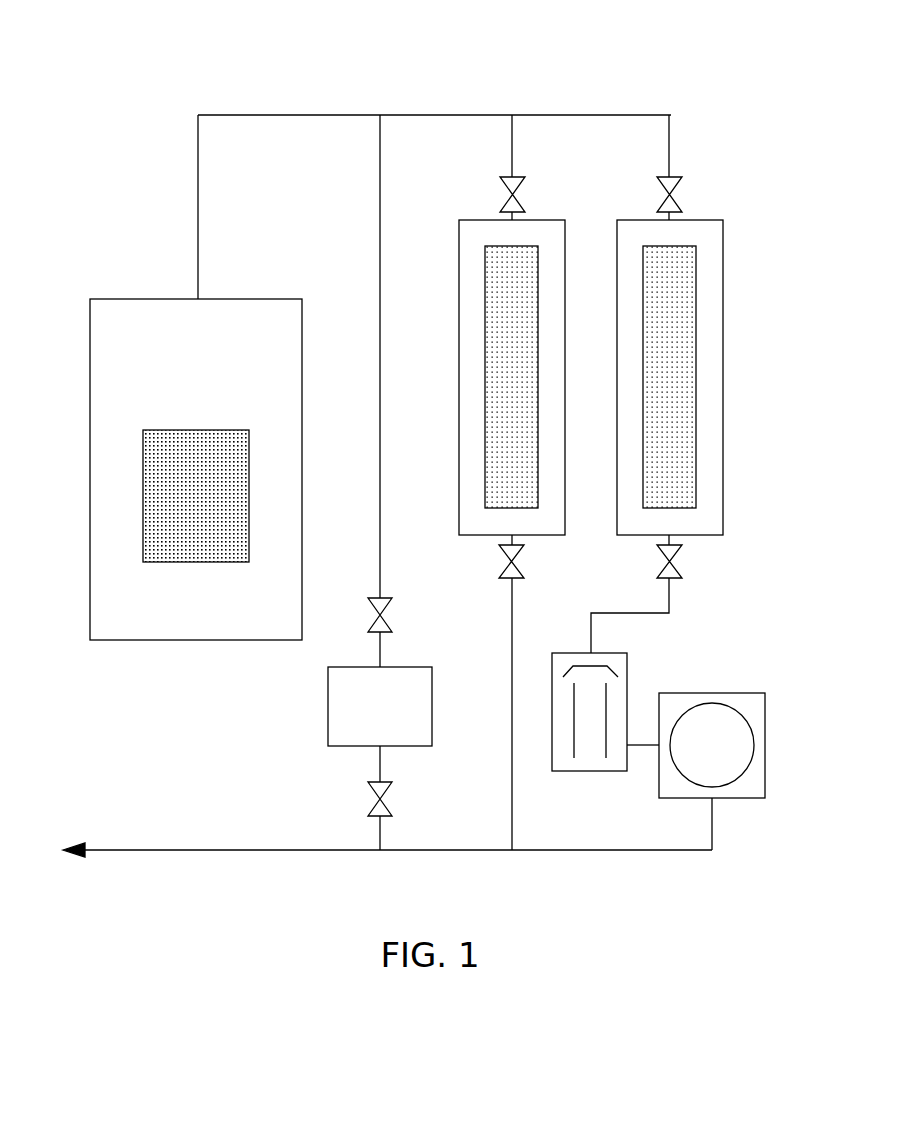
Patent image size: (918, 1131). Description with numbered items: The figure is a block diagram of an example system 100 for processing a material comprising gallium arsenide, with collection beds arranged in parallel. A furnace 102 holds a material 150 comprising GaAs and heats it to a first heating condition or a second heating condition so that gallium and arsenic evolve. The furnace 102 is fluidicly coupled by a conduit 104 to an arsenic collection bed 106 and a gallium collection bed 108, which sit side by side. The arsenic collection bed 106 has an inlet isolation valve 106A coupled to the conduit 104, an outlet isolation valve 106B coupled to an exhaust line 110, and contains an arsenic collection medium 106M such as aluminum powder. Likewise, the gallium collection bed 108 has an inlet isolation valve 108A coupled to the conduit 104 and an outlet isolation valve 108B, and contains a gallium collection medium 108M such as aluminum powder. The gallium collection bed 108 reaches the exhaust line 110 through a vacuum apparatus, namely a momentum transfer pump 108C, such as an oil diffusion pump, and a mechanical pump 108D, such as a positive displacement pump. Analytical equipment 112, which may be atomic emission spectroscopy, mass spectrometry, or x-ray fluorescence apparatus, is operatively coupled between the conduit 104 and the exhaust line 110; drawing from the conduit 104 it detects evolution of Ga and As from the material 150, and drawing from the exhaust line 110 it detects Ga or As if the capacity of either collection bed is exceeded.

The system 100 is at (625, 69).
The furnace 102 is at (260, 308).
The conduit 104 is at (440, 115).
The arsenic collection bed 106 is at (548, 227).
The inlet isolation valve 106A is at (510, 195).
The outlet isolation valve 106B is at (508, 573).
The arsenic collection medium 106M is at (502, 317).
The gallium collection bed 108 is at (710, 227).
The inlet isolation valve 108A is at (673, 177).
The outlet isolation valve 108B is at (672, 580).
The momentum transfer pump 108C is at (592, 760).
The mechanical pump 108D is at (710, 698).
The gallium collection medium 108M is at (682, 315).
The exhaust line 110 is at (143, 850).
The analytical equipment 112 is at (335, 720).
The material 150 is at (228, 455).